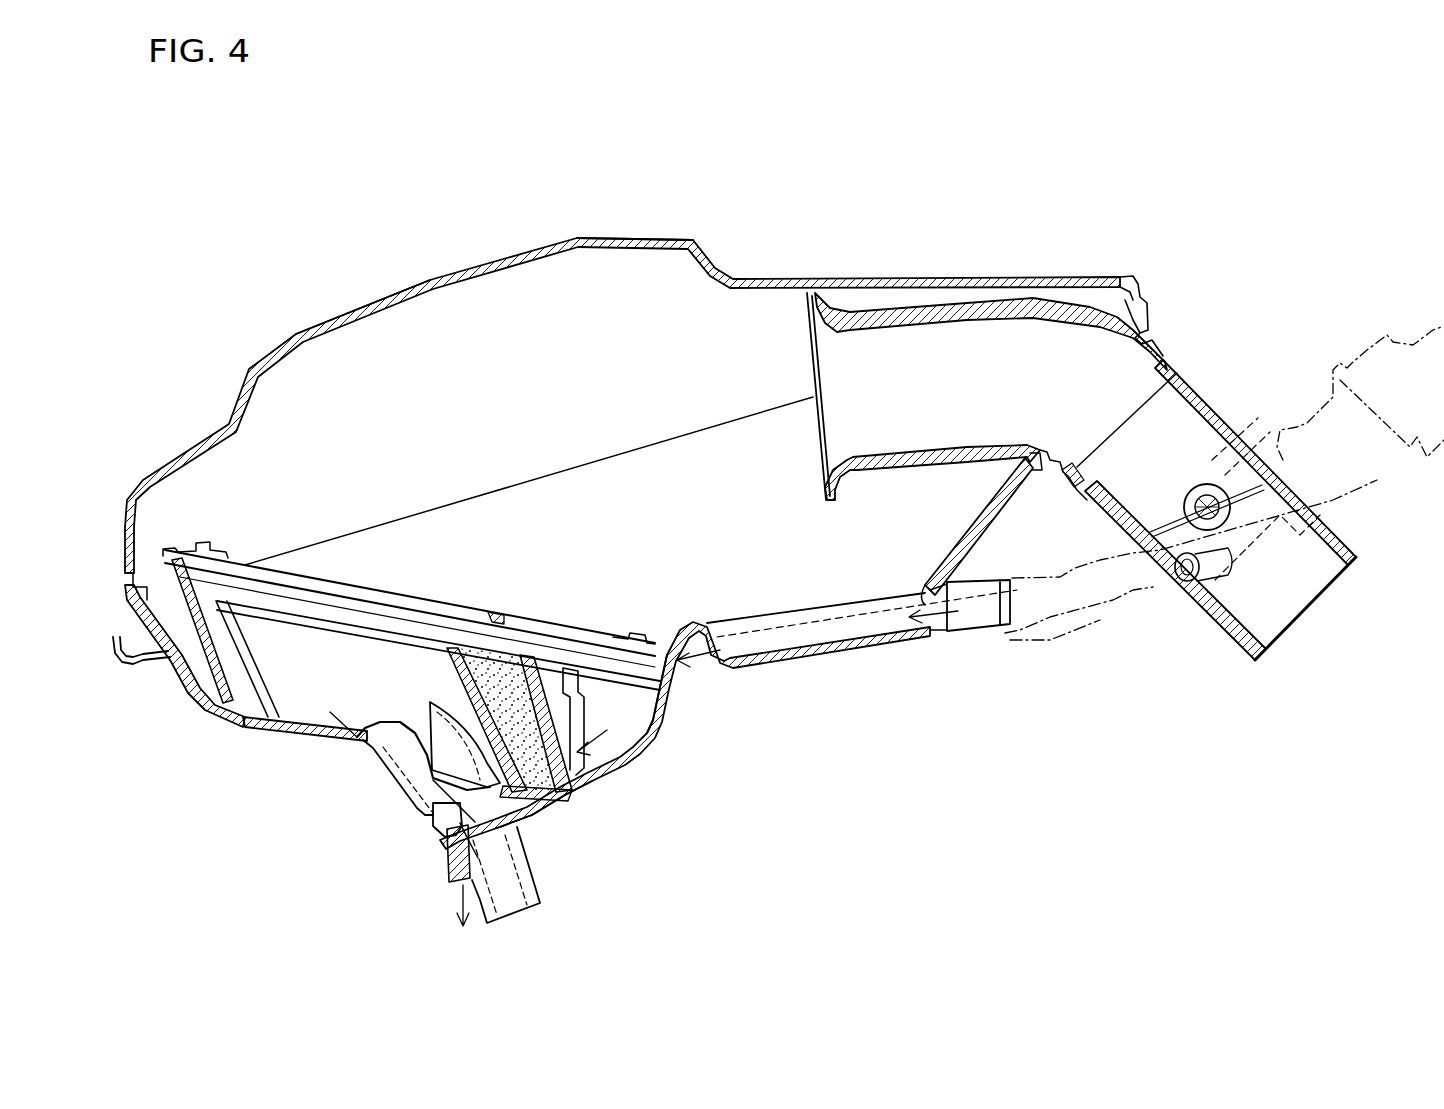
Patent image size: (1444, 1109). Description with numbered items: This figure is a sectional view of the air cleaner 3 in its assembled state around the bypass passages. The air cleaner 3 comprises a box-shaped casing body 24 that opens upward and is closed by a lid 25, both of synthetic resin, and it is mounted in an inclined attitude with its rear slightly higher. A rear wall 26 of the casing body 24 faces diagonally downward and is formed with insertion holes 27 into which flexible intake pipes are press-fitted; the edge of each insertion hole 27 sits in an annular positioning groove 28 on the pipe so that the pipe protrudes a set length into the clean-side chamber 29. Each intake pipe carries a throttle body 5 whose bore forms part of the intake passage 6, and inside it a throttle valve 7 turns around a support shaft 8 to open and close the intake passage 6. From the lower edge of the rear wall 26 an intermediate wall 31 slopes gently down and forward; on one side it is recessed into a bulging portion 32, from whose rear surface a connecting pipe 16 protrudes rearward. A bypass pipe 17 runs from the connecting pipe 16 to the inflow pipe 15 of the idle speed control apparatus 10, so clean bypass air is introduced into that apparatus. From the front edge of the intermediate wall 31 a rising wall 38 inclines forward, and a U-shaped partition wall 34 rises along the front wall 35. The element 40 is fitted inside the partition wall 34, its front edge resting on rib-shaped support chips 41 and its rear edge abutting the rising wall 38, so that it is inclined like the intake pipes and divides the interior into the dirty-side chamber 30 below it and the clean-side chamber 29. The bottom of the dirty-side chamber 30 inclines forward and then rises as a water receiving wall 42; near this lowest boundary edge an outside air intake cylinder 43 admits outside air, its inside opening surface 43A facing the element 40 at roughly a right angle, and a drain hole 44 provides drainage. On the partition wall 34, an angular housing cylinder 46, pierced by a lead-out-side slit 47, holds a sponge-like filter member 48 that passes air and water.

The air cleaner 3 is at (668, 228).
The throttle body 5 is at (1225, 645).
The intake passage 6 is at (1035, 353).
The throttle valve 7 is at (1165, 495).
The support shaft 8 is at (1210, 500).
The idle speed control apparatus 10 is at (1365, 345).
The inflow pipe 15 is at (1200, 607).
The connecting pipe 16 is at (943, 632).
The bypass pipe 17 is at (1105, 605).
The casing body 24 is at (263, 737).
The lid 25 is at (313, 330).
The rear wall 26 is at (973, 525).
The insertion hole 27 is at (1145, 345).
The positioning groove 28 is at (1030, 475).
The clean-side chamber 29 is at (585, 318).
The dirty-side chamber 30 is at (310, 710).
The intermediate wall 31 is at (822, 590).
The bulging portion 32 is at (785, 662).
The partition wall 34 is at (200, 700).
The front wall 35 is at (165, 670).
The rising wall 38 is at (668, 722).
The element 40 is at (395, 615).
The support chip 41 is at (222, 730).
The water receiving wall 42 is at (400, 795).
The outside air intake cylinder 43 is at (540, 875).
The opening surface 43A is at (360, 720).
The drain hole 44 is at (443, 850).
The housing cylinder 46 is at (568, 672).
The lead-out-side slit 47 is at (570, 800).
The filter member 48 is at (515, 680).